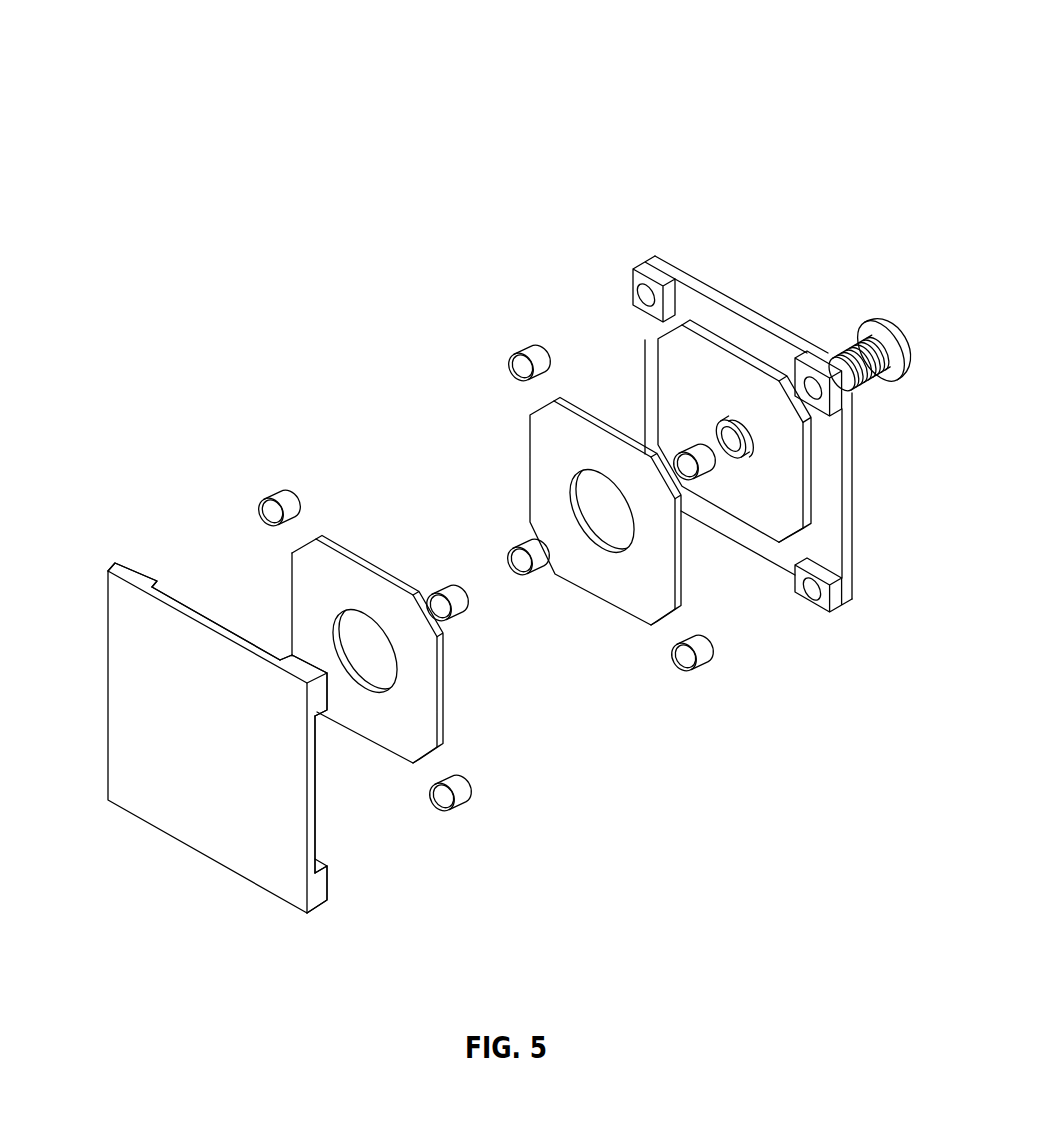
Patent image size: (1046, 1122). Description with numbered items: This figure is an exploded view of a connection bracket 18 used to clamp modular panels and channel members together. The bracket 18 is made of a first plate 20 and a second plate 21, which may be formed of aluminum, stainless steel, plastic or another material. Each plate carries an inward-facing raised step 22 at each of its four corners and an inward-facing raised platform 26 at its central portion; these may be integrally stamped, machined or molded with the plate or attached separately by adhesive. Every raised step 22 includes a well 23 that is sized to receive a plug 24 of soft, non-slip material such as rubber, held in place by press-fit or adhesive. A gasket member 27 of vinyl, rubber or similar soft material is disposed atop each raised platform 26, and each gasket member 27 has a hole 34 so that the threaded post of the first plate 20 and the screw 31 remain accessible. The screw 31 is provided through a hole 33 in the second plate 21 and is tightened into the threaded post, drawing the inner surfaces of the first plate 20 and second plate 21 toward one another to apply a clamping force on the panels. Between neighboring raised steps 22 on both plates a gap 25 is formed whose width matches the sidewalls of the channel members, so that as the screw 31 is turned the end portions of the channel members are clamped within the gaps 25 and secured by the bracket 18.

The bracket 18 is at (304, 126).
The first plate 20 is at (197, 700).
The second plate 21 is at (790, 338).
The raised step 22 is at (123, 567).
The well 23 is at (821, 390).
The plug 24 is at (275, 501).
The gap 25 is at (217, 612).
The raised platform 26 is at (683, 369).
The gasket member 27 is at (383, 597).
The screw 31 is at (886, 322).
The hole 33 is at (740, 452).
The hole 34 is at (385, 664).